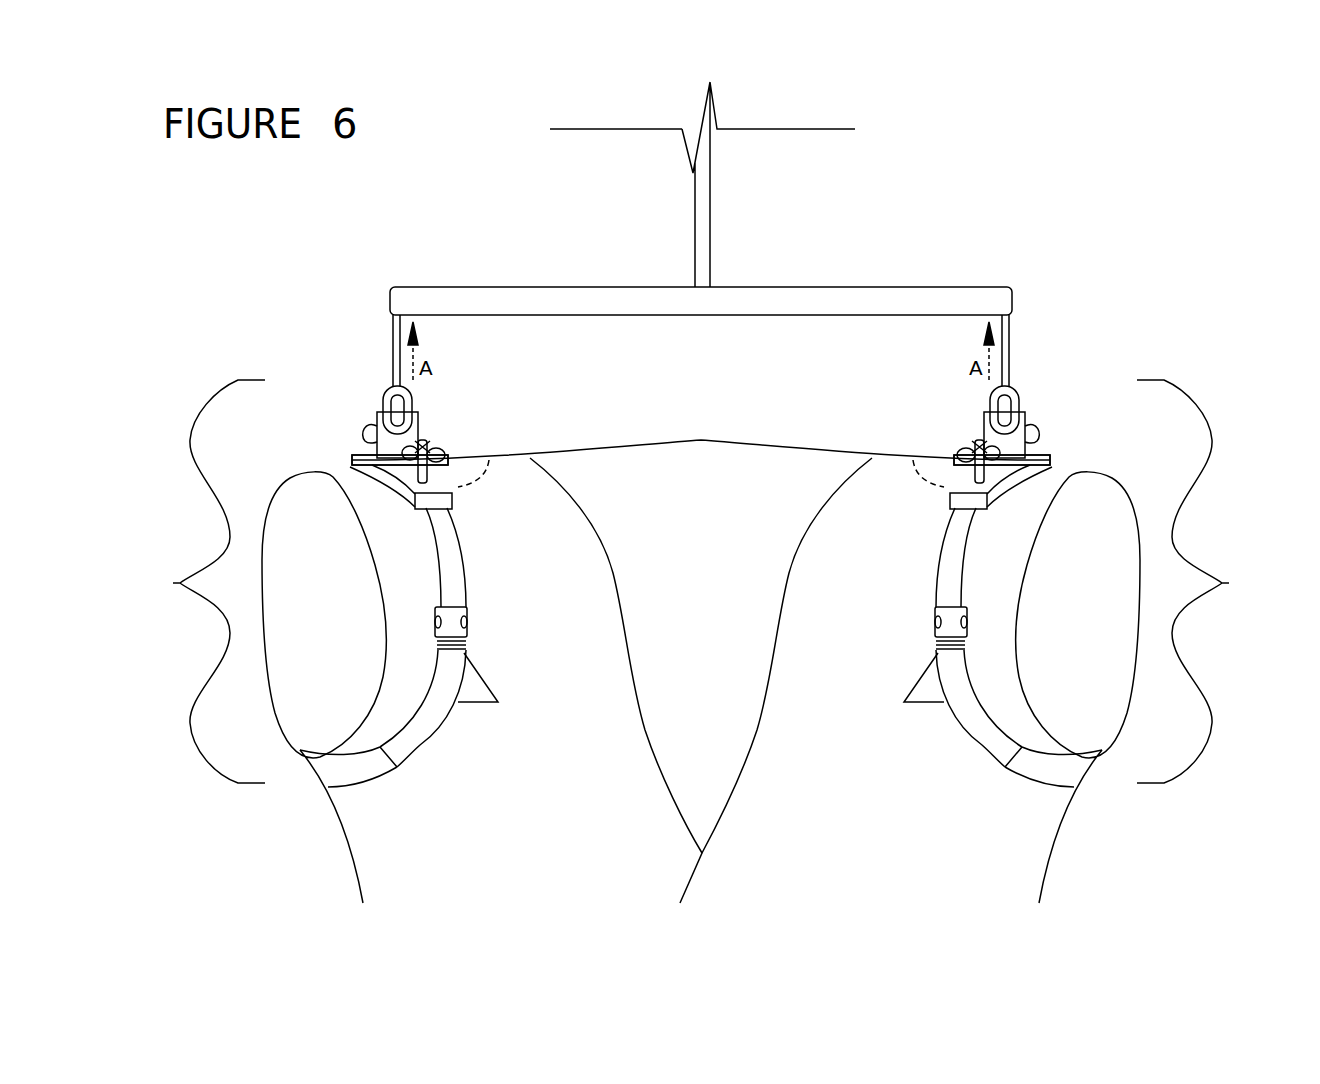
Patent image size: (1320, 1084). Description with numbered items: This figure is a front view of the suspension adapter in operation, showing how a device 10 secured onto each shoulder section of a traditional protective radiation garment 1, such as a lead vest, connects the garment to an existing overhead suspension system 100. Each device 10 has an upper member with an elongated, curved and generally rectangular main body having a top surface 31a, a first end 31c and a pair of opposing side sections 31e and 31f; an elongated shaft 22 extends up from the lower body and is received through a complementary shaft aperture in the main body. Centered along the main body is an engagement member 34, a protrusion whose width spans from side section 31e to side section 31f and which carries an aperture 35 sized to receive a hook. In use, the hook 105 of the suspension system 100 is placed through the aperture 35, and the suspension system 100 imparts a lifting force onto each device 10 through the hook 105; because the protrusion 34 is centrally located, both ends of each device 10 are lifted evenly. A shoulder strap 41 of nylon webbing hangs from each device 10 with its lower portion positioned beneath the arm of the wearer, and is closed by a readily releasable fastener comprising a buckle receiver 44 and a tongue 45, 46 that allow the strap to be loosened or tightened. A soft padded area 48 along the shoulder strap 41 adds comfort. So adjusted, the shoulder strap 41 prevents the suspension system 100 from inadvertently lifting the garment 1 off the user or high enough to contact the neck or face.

The protective radiation garment 1 is at (699, 568).
The device 10 is at (701, 581).
The elongated shaft 22 is at (423, 441).
The top surface 31a is at (402, 468).
The first end 31c is at (423, 503).
The side section 31e is at (490, 460).
The side section 31f is at (365, 459).
The engagement member 34 is at (422, 432).
The aperture 35 is at (377, 414).
The shoulder strap 41 is at (455, 572).
The buckle receiver 44 is at (460, 612).
The tongue 45 is at (420, 733).
The tongue 46 is at (465, 650).
The padded area 48 is at (367, 770).
The overhead suspension system 100 is at (668, 245).
The hook 105 is at (390, 387).